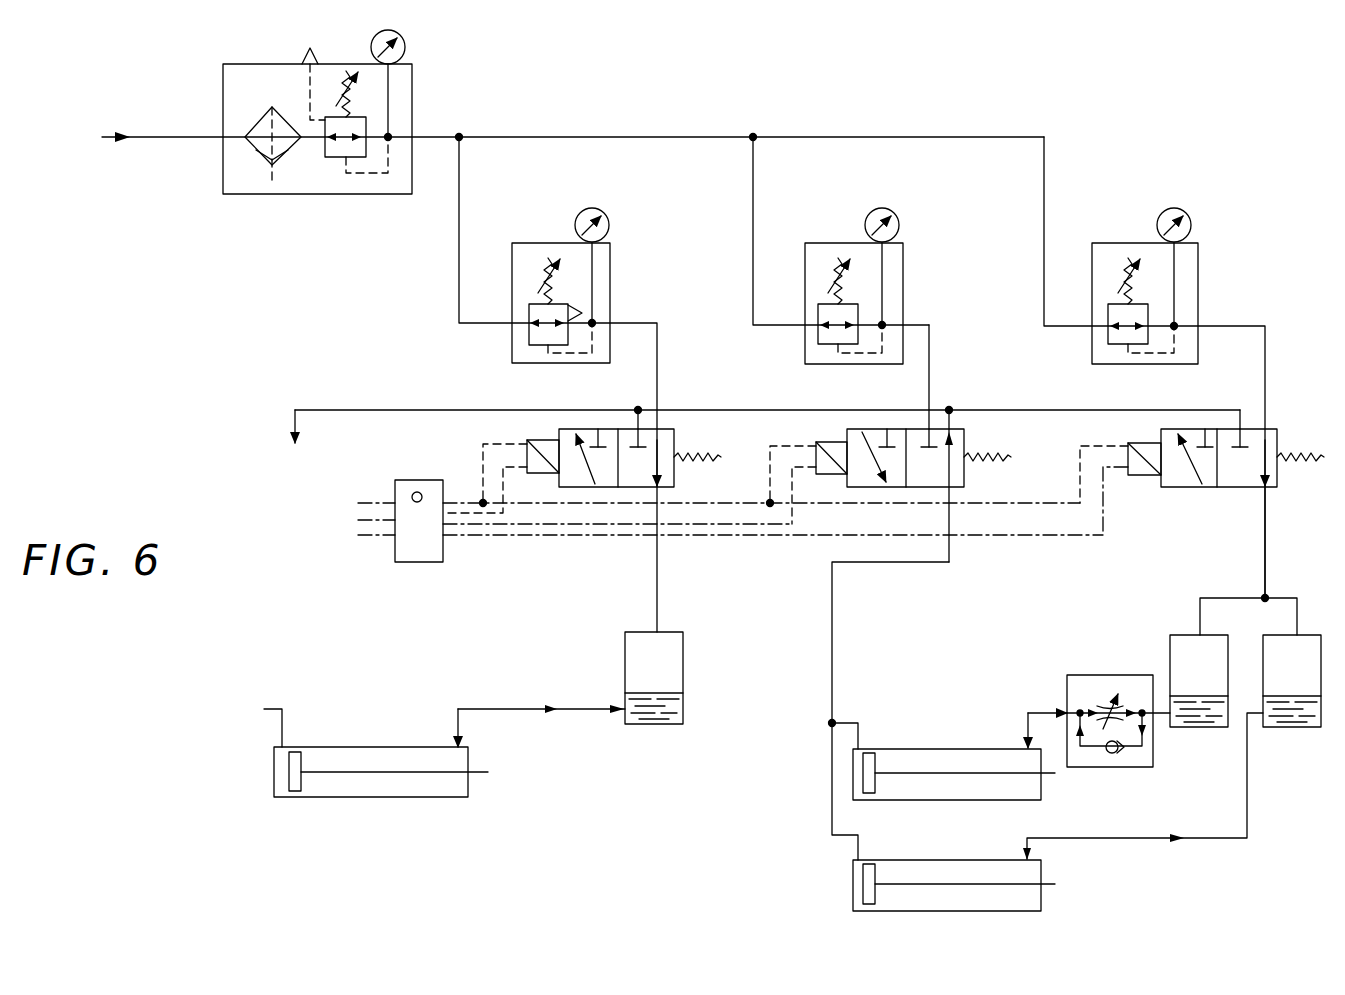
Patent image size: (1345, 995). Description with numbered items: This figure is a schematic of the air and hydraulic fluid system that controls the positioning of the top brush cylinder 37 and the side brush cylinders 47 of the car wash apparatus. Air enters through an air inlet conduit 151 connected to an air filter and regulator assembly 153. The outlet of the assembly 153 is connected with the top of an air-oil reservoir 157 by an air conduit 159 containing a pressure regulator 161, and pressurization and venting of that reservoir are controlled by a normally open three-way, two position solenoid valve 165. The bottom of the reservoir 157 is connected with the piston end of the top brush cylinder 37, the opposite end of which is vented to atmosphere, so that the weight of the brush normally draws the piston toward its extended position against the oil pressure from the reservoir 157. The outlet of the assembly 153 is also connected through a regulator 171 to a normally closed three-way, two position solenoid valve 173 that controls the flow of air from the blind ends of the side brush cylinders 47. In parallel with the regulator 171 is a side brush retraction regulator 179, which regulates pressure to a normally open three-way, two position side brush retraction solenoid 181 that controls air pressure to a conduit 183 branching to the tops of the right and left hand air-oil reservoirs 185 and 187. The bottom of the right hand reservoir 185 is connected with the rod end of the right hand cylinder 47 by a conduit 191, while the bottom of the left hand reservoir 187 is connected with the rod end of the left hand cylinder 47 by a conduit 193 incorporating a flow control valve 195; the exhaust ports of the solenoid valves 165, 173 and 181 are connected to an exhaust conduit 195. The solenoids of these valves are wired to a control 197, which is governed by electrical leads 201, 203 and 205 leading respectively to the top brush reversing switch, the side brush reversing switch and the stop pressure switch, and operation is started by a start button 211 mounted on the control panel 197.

The air inlet conduit 151 is at (172, 137).
The air filter and regulator assembly 153 is at (412, 92).
The air conduit 159 is at (462, 190).
The pressure regulator 161 is at (612, 273).
The regulator 171 is at (906, 277).
The side brush retraction regulator 179 is at (1200, 273).
The flow control valve / exhaust conduit 195 is at (348, 410).
The solenoid valve 165 is at (672, 428).
The solenoid valve 173 is at (966, 476).
The side brush retraction solenoid 181 is at (1292, 420).
The conduit 183 is at (1292, 532).
The control 197 is at (430, 563).
The start button 211 is at (421, 491).
The electrical lead 201 is at (372, 501).
The electrical lead 203 is at (365, 518).
The electrical lead 205 is at (366, 536).
The air-oil reservoir 157 is at (688, 663).
The top brush cylinder 37 is at (406, 746).
The side brush cylinders 47 is at (922, 745).
The conduit 193 is at (1040, 711).
The left hand air-oil reservoir 187 is at (1170, 645).
The right hand air-oil reservoir 185 is at (1263, 650).
The conduit 191 is at (1248, 787).